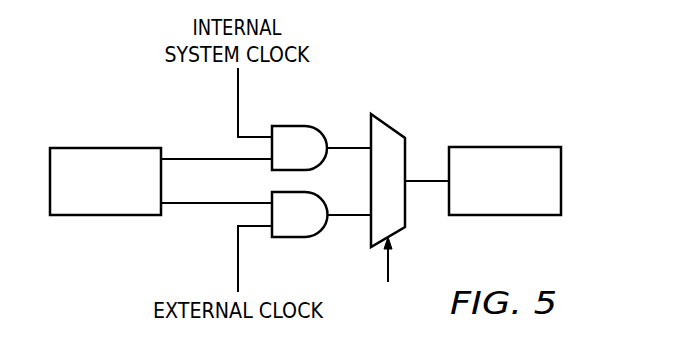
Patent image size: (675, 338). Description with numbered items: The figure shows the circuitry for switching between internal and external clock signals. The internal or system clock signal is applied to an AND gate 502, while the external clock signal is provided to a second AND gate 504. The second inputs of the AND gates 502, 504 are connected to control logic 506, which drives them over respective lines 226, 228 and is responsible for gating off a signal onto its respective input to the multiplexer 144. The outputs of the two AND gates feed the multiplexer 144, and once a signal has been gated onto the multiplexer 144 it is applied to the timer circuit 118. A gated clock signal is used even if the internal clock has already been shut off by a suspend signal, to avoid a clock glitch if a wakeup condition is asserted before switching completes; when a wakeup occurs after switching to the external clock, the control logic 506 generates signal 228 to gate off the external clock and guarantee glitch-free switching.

The control logic 506 is at (97, 148).
The internal clock enable signal line 226 is at (196, 159).
The signal 228 is at (196, 203).
The AND gate 502 is at (321, 125).
The AND gate 504 is at (321, 238).
The multiplexer 144 is at (390, 127).
The timer circuit 118 is at (512, 147).